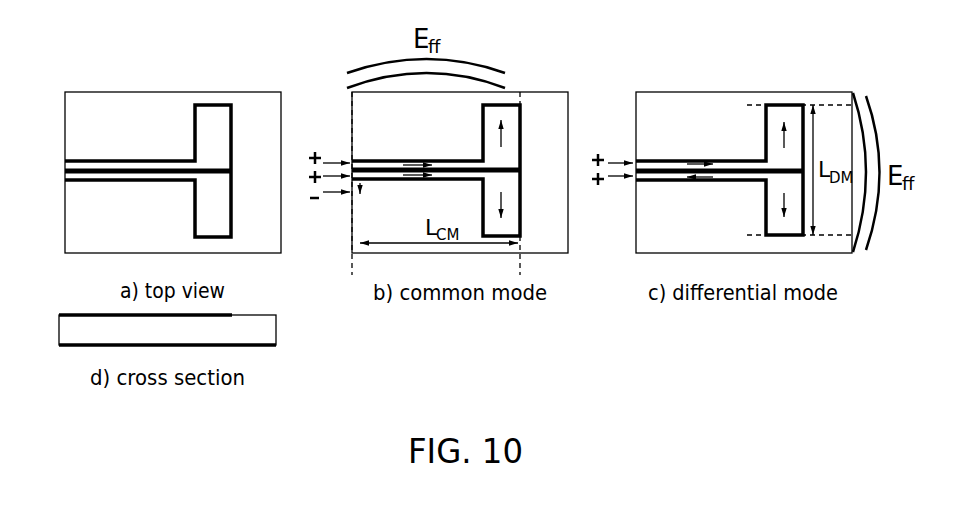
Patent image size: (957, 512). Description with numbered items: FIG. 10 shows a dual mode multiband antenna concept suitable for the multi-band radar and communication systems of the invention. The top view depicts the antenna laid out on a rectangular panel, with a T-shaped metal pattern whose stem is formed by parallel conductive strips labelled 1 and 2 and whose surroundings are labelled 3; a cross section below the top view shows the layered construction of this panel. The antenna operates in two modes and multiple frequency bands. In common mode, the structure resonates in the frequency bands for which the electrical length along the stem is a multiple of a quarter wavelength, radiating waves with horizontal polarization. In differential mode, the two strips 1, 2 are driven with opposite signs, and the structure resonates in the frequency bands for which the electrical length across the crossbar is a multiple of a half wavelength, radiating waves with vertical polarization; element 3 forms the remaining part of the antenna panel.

The first conductor strip 1 is at (63, 163).
The second conductor strip 2 is at (63, 177).
The substrate 3 is at (63, 193).